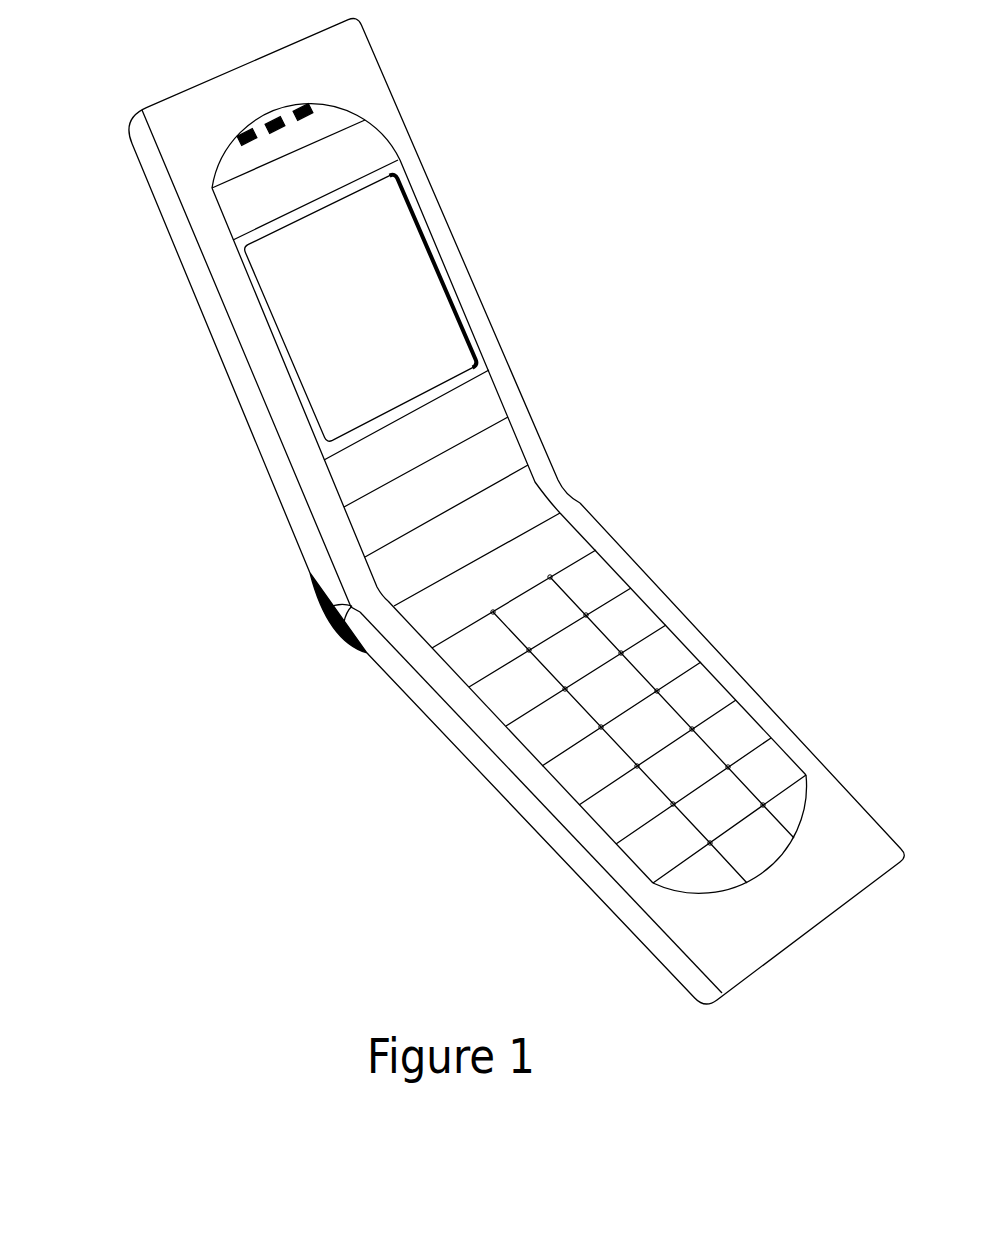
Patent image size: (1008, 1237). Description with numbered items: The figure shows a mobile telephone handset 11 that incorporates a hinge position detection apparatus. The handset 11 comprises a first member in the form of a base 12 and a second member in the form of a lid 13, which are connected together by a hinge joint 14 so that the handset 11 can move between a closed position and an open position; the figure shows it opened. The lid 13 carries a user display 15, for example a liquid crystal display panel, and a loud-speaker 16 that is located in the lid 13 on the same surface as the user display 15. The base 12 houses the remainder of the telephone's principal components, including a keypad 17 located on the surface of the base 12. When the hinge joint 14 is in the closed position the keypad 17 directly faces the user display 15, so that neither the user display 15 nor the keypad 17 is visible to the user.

The mobile telephone handset 11 is at (185, 528).
The base 12 is at (511, 838).
The lid 13 is at (168, 275).
The hinge joint 14 is at (510, 513).
The user display 15 is at (417, 283).
The loud-speaker 16 is at (337, 98).
The keypad 17 is at (633, 698).